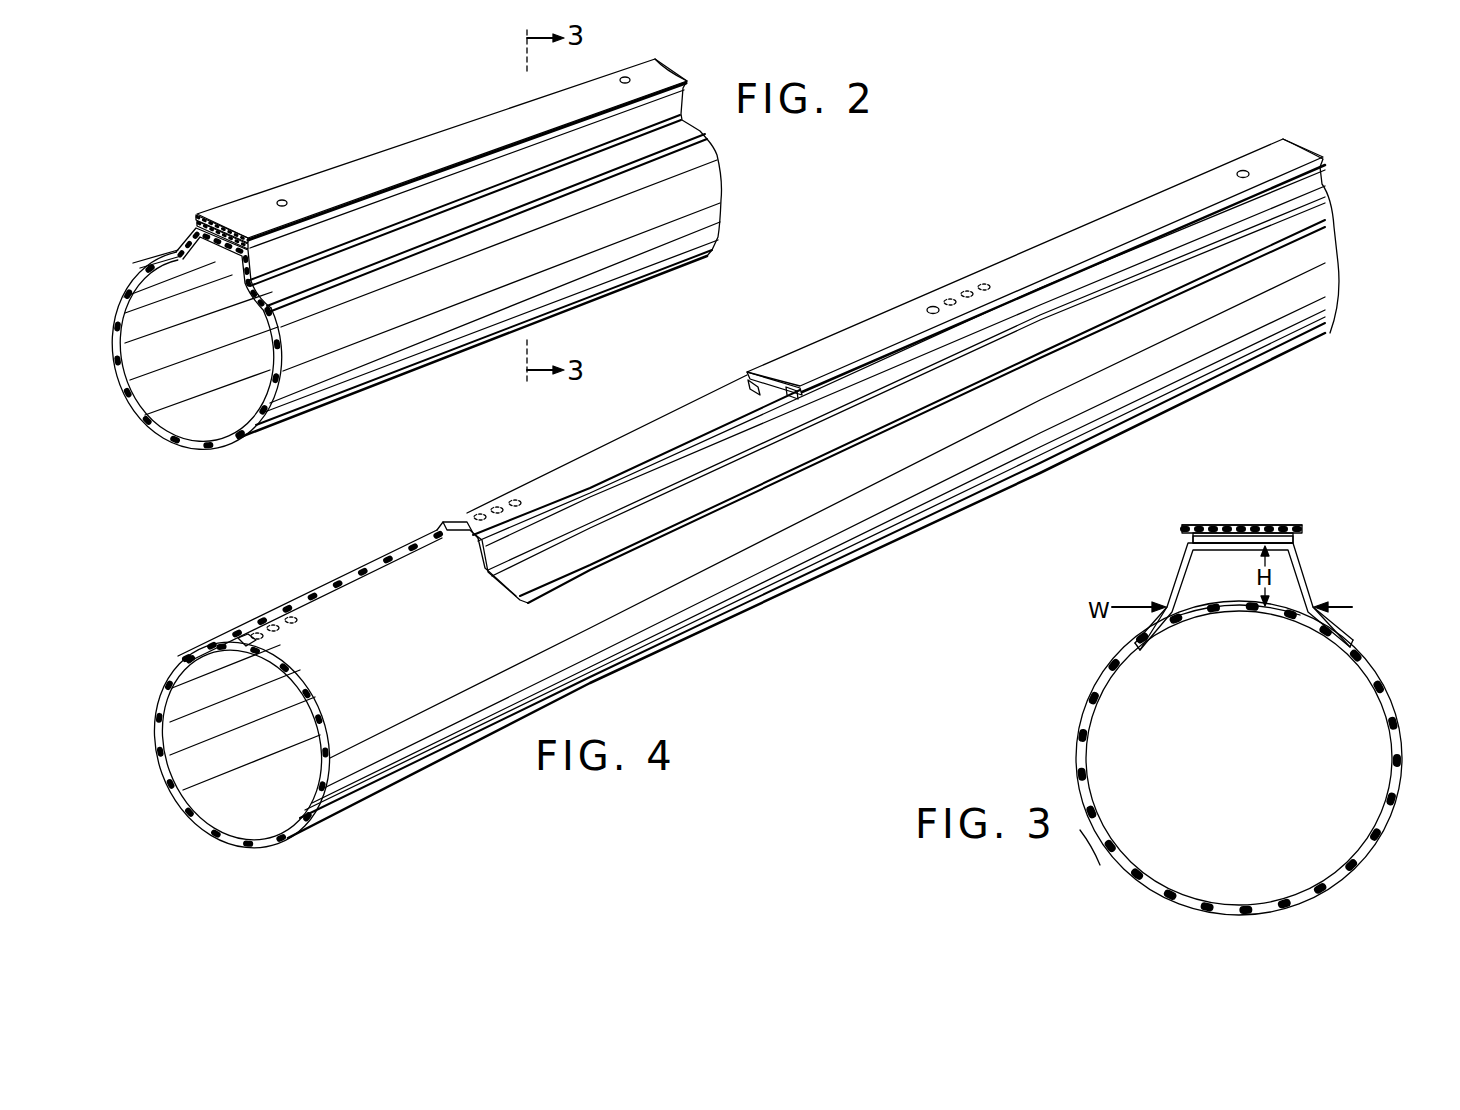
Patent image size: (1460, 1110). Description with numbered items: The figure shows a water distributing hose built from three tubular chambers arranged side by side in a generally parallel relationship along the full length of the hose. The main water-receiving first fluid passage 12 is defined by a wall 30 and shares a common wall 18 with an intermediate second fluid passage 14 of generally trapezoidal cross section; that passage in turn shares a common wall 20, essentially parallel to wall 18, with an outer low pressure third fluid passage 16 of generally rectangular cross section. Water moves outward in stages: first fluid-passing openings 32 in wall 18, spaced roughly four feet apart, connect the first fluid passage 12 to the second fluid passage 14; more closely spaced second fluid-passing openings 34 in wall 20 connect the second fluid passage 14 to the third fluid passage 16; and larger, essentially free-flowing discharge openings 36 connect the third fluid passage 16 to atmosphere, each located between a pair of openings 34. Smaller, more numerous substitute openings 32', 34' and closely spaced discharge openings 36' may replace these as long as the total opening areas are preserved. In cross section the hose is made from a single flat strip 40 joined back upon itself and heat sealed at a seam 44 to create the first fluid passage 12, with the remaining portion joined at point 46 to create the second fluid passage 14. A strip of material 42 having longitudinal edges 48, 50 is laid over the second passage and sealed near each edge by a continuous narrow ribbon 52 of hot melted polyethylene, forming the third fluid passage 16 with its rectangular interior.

In FIG. 2, the first fluid passage 12 is at (190, 418).
In FIG. 4, the first fluid passage 12 is at (235, 800).
In FIG. 3, the first fluid passage 12 is at (1252, 762).
In FIG. 2, the second fluid passage 14 is at (195, 243).
In FIG. 4, the second fluid passage 14 is at (455, 540).
In FIG. 3, the second fluid passage 14 is at (1205, 577).
In FIG. 2, the third fluid passage 16 is at (222, 220).
In FIG. 4, the third fluid passage 16 is at (747, 385).
In FIG. 3, the third fluid passage 16 is at (1242, 525).
In FIG. 2, the common wall 18 is at (216, 268).
In FIG. 4, the common wall 18 is at (440, 575).
In FIG. 3, the common wall 18 is at (1243, 608).
In FIG. 2, the common wall 20 is at (233, 236).
In FIG. 4, the common wall 20 is at (530, 492).
In FIG. 3, the common wall 20 is at (1270, 530).
In FIG. 4, the wall 30 is at (390, 745).
In FIG. 4, the first fluid-passing openings 32 is at (292, 651).
In FIG. 4, the substitute first fluid-passing openings 32' is at (259, 599).
In FIG. 4, the second fluid-passing openings 34 is at (606, 443).
In FIG. 4, the substitute second fluid-passing openings 34' is at (493, 475).
In FIG. 4, the discharge fluid-passing openings 36 is at (1053, 221).
In FIG. 4, the substitute discharge fluid-passing openings 36' is at (951, 265).
In FIG. 3, the flat strip 40 is at (1105, 862).
In FIG. 4, the strip of material 42 is at (1115, 220).
In FIG. 3, the strip of material 42 is at (1208, 523).
In FIG. 3, the seam 44 is at (1160, 640).
In FIG. 3, the seam point 46 is at (1345, 625).
In FIG. 4, the longitudinal edge 48 is at (1033, 248).
In FIG. 4, the longitudinal edge 50 is at (1228, 222).
In FIG. 3, the narrow ribbon 52 is at (1195, 535).